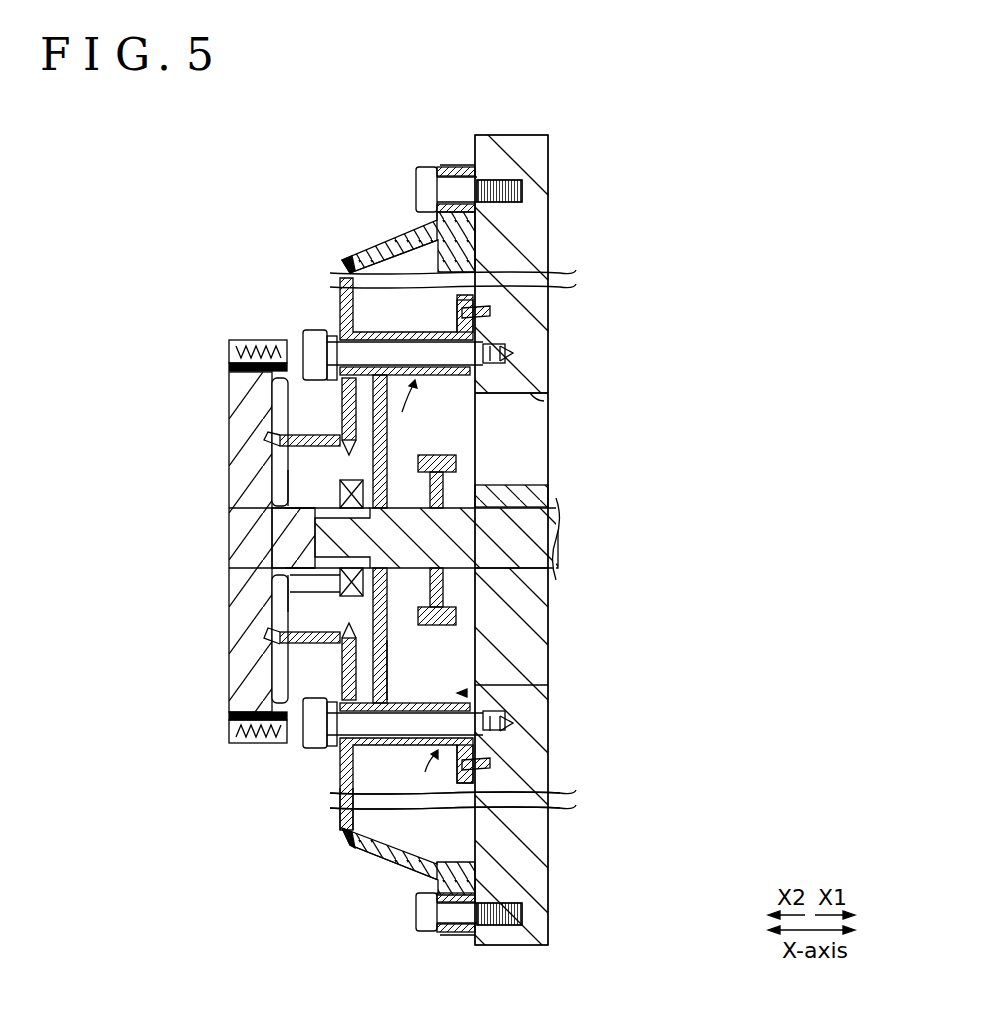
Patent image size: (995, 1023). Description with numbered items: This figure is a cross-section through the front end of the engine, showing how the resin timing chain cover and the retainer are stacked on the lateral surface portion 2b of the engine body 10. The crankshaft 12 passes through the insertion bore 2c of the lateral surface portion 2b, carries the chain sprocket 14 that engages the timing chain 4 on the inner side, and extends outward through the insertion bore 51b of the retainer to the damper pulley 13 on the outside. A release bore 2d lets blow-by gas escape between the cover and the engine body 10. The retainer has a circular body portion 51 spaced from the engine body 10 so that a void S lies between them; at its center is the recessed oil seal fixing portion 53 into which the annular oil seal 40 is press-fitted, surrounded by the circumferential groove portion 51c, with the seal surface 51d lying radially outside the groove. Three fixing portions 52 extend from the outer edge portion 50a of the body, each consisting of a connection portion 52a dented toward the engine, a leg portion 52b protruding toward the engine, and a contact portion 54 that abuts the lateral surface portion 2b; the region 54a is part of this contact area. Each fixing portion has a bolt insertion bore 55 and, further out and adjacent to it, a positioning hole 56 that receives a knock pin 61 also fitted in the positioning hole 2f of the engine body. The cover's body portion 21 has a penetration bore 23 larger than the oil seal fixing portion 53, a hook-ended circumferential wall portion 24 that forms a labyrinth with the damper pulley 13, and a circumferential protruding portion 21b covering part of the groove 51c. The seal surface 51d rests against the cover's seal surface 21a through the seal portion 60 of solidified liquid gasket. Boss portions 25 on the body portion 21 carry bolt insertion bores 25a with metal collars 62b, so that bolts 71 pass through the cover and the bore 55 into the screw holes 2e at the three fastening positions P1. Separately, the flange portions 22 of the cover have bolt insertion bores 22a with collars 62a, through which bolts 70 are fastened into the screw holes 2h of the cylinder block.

The engine body 10 is at (574, 130).
The lateral surface portion 2b is at (528, 262).
The insertion bore 2c is at (536, 566).
The release bore 2d is at (536, 396).
The screw holes 2e is at (506, 353).
The positioning holes 2f is at (470, 318).
The screw holes 2h is at (523, 191).
The timing chain 4 is at (478, 614).
The crankshaft 12 is at (548, 519).
The damper pulley 13 is at (250, 544).
The chain sprocket 14 is at (478, 600).
The body portion 21 is at (343, 817).
The seal surface 21a is at (392, 655).
The circumferential protruding portion 21b is at (320, 593).
The flange portions 22 is at (477, 225).
The bolt insertion bores 22a is at (420, 172).
The penetration bore 23 is at (320, 588).
The circumferential wall portion 24 is at (300, 633).
The boss portions 25 is at (330, 332).
The bolt insertion bore 25a is at (303, 342).
The oil seal 40 is at (282, 489).
The outer edge portion 50a is at (478, 823).
The body portion 51 is at (478, 449).
The insertion bore 51b is at (478, 497).
The circumferential groove portion 51c is at (292, 456).
The seal surface 51d is at (290, 440).
The fixing portions 52 is at (370, 330).
The connection portion 52a is at (340, 391).
The leg portion 52b is at (344, 262).
The oil seal fixing portion 53 is at (302, 510).
The contact portion 54 is at (478, 300).
The support plate end 54a is at (478, 333).
The bolt insertion bore 55 is at (437, 377).
The positioning hole 56 is at (450, 318).
The seal portion 60 is at (345, 600).
The knock pins 61 is at (478, 315).
The collar 62a is at (478, 170).
The collar 62b is at (247, 366).
The bolts 70 is at (425, 188).
The bolts 71 is at (265, 362).
The fastening positions P1 is at (415, 587).
The void S is at (462, 693).